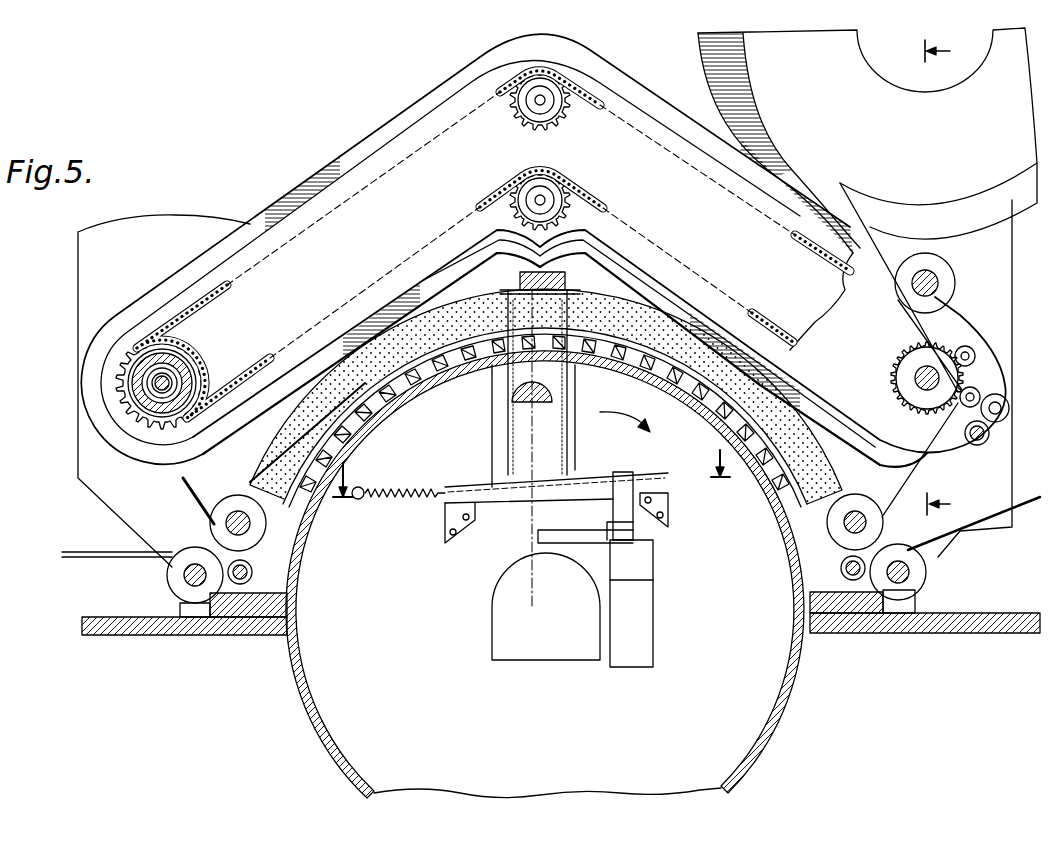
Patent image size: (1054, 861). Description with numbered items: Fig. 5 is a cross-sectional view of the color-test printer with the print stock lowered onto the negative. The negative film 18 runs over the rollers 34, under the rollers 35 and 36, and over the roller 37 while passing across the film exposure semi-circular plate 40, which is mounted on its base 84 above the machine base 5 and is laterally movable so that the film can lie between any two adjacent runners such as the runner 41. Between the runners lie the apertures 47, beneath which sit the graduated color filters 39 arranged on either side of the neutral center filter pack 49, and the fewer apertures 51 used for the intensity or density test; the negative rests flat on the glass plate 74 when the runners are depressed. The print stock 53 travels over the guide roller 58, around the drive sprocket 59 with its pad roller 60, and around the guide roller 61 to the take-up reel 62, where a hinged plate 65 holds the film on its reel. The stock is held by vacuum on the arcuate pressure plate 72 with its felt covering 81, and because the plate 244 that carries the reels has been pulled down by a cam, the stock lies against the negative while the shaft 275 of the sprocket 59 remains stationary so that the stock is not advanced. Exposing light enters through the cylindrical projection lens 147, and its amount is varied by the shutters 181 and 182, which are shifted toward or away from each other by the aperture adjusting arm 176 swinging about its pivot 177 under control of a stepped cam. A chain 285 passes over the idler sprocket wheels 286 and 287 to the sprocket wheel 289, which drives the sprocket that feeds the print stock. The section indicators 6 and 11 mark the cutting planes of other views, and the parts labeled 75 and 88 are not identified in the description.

The base 5 is at (125, 632).
The section line 6- 6 is at (531, 462).
The section line 11- 11 is at (954, 278).
The film 18 is at (138, 556).
The rollers 34 is at (180, 590).
The rollers 35 is at (253, 575).
The rollers 36 is at (845, 572).
The roller 37 is at (930, 580).
The color filters 39 is at (472, 370).
The film exposure semi-circular plate 40 is at (800, 555).
The runner 41 is at (735, 416).
The apertures 47 is at (603, 352).
The center filter pack 49 is at (550, 333).
The apertures 51 is at (223, 507).
The print stock 53 is at (183, 497).
The guide roller 58 is at (868, 508).
The drive sprocket 59 is at (895, 370).
The pad roller 60 is at (978, 395).
The guide roller 61 is at (937, 278).
The take-up reel 62 is at (700, 70).
The plate 65 is at (867, 133).
The pressure plate 72 is at (824, 444).
The glass plate 74 is at (505, 333).
The block 75 is at (560, 281).
The felt covering 81 is at (546, 396).
The base 84 is at (290, 610).
The drum 88 is at (324, 743).
The cylindrical projection lens 147 is at (555, 393).
The aperture adjusting arm 176 is at (575, 530).
The pivot 177 is at (625, 475).
The shutter 181 is at (500, 493).
The shutter 182 is at (584, 475).
The plate 244 is at (545, 300).
The shaft 275 is at (912, 379).
The chain 285 is at (797, 262).
The idler sprocket wheel 286 is at (565, 118).
The idler sprocket wheel 287 is at (568, 185).
The sprocket wheel 289 is at (190, 370).